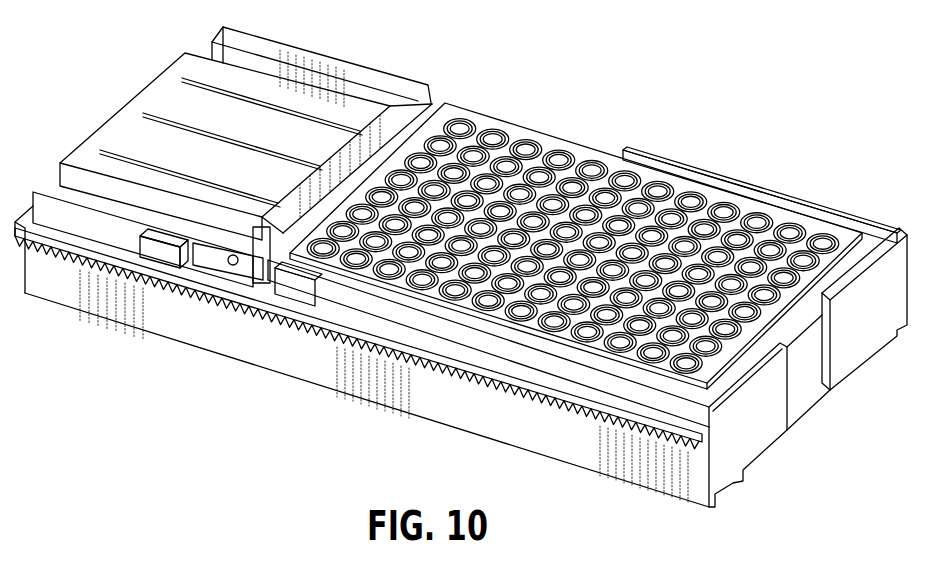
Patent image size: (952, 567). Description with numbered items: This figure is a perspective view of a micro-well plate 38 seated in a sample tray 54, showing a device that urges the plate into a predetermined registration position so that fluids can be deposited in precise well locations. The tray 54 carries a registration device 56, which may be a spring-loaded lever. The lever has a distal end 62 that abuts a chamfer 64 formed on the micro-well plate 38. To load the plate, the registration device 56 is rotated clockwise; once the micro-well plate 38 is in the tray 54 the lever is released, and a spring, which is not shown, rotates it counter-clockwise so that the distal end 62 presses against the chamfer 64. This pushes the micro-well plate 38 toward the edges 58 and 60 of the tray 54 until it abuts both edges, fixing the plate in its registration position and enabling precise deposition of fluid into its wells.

The micro-well plate 38 is at (558, 136).
The sample tray 54 is at (672, 472).
The registration device 56 is at (205, 265).
The edge 58 is at (841, 209).
The edge 60 is at (861, 325).
The distal end 62 is at (247, 278).
The chamfer 64 is at (262, 228).